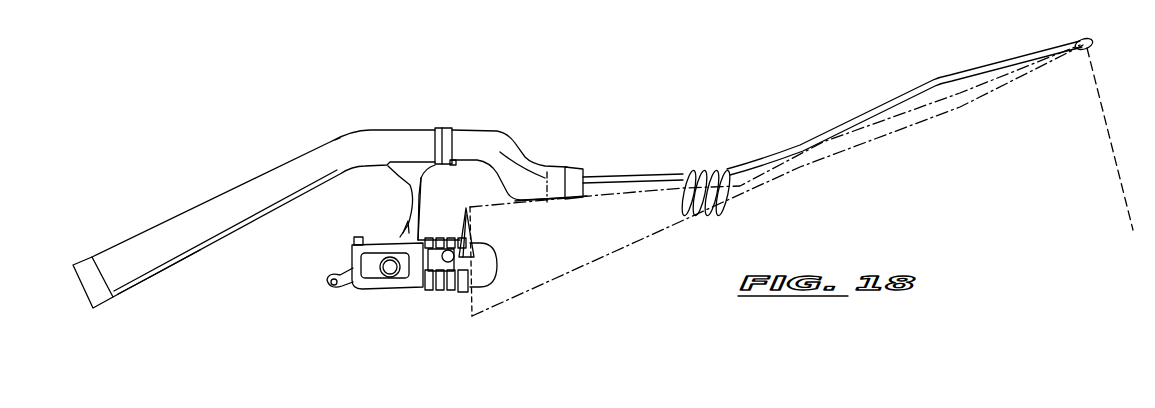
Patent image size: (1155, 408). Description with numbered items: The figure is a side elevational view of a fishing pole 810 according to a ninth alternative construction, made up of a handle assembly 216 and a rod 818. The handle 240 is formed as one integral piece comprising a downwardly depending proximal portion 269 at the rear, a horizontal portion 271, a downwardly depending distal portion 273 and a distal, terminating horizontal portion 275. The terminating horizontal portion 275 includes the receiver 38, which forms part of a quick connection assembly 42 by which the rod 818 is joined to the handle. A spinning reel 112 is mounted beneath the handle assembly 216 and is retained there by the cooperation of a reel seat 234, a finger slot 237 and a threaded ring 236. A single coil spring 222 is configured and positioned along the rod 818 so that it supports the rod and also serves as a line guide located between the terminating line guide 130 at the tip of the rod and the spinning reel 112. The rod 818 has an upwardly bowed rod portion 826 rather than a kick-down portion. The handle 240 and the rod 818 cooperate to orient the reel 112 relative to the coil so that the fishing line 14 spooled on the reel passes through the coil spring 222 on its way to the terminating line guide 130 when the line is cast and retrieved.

The fishing line 14 is at (1105, 122).
The receiver 38 is at (579, 164).
The quick connection assembly 42 is at (612, 171).
The spinning reel 112 is at (404, 316).
The terminating line guide 130 is at (1092, 42).
The handle assembly 216 is at (245, 282).
The coil spring 222 is at (713, 210).
The reel seat 234 is at (458, 172).
The threaded ring 236 is at (443, 164).
The finger slot 237 is at (388, 166).
The handle 240 is at (176, 215).
The downwardly depending proximal portion 269 is at (268, 170).
The horizontal portion 271 is at (472, 128).
The downwardly depending distal portion 273 is at (513, 147).
The distal terminating horizontal portion 275 is at (530, 198).
The fishing pole 810 is at (254, 123).
The rod 818 is at (814, 160).
The upwardly bowed rod portion 826 is at (922, 82).